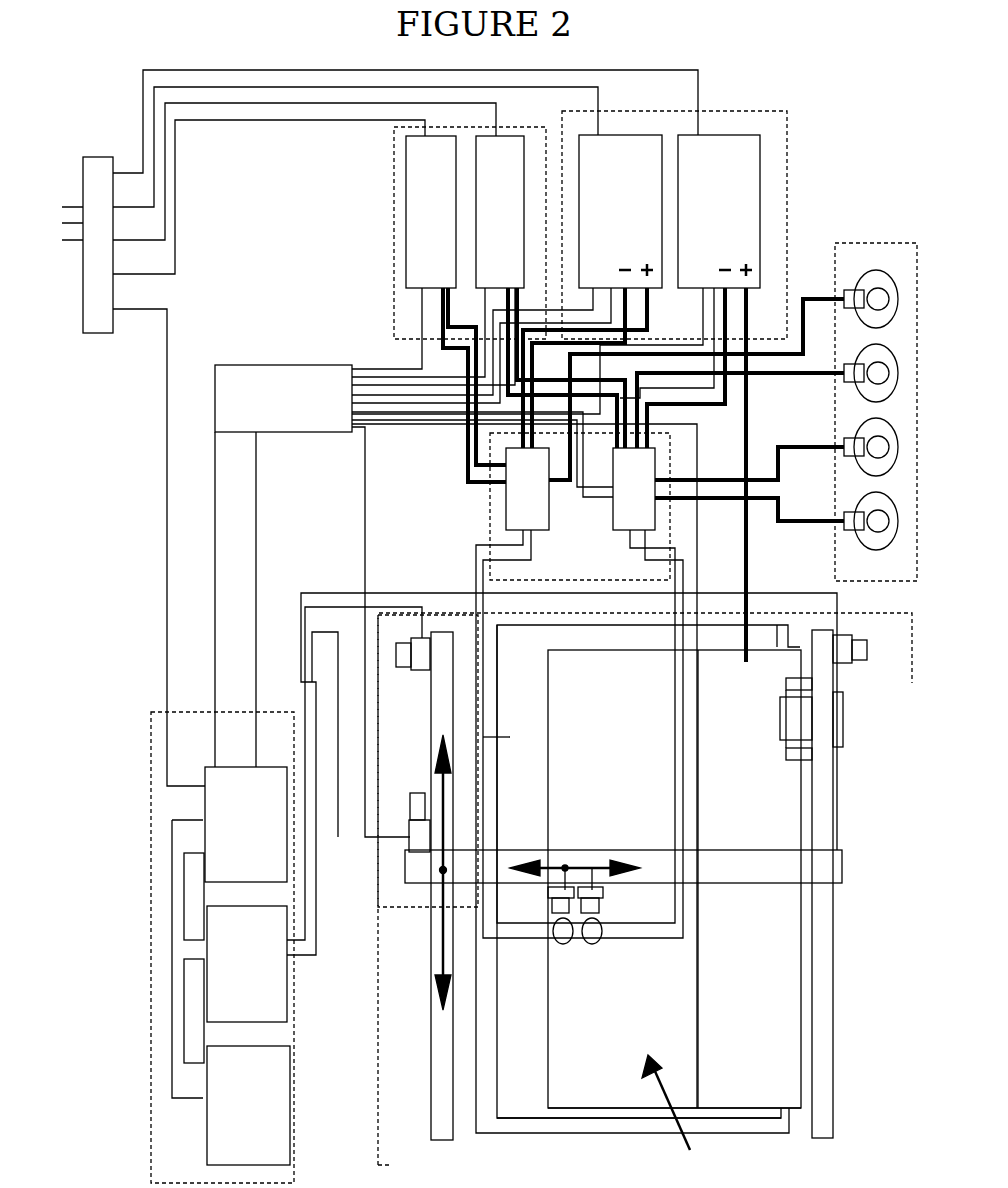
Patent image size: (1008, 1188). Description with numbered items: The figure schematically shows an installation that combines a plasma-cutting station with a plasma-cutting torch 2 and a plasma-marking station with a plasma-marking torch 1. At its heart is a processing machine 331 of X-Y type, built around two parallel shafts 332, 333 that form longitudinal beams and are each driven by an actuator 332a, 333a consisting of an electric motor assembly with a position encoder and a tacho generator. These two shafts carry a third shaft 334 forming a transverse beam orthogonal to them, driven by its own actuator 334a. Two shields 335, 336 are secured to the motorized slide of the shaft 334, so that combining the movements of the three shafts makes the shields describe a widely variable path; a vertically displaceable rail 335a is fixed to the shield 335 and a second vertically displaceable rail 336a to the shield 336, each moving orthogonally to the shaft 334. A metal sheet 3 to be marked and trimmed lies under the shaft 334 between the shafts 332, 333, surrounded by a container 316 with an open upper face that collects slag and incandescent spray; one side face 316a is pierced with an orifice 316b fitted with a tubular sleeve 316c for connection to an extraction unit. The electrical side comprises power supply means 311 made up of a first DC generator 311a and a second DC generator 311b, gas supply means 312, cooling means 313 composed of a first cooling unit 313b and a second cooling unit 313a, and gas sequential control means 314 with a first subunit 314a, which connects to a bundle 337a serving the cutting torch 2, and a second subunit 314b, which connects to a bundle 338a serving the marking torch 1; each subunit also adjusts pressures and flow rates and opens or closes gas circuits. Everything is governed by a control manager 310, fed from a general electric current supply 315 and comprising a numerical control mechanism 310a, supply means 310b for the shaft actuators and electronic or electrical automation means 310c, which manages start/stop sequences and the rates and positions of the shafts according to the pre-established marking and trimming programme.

The general electric current supply 315 is at (98, 157).
The means for supplying power 311 is at (772, 136).
The first DC generator 311a is at (719, 211).
The second DC generator 311b is at (620, 211).
The means for supplying gas 312 is at (864, 246).
The means for cooling the plasma torches 313 is at (394, 296).
The second cooling unit 313a is at (431, 212).
The first cooling unit 313b is at (500, 212).
The means for sequential control, adjustment and actuation of the gases 314 is at (490, 528).
The first subunit 314a is at (531, 500).
The second subunit 314b is at (625, 515).
The control manager 310 is at (160, 1136).
The numerical control mechanism 310a is at (207, 1093).
The supply means for the shaft actuators 310b is at (205, 985).
The electronic or electrical automation means 310c is at (205, 847).
The processing machine 331 is at (392, 1115).
The parallel shaft 332 is at (450, 1082).
The actuator 332a is at (420, 670).
The third shaft 334 is at (730, 860).
The actuator 334a is at (412, 808).
The parallel shaft 333 is at (828, 1050).
The actuator 333a is at (842, 663).
The container 316 is at (556, 1122).
The side face 316a is at (782, 787).
The orifice 316b is at (782, 727).
The tubular sleeve 316c is at (845, 712).
The bundle 337a is at (500, 737).
The bundle 338a is at (664, 752).
The shield 335 is at (566, 866).
The shield 336 is at (596, 866).
The vertically displaceable rail 335a is at (546, 944).
The vertically displaceable rail 336a is at (600, 912).
The plasma-marking torch 1 is at (596, 945).
The plasma-cutting torch 2 is at (564, 945).
The metal sheet 3 is at (674, 1115).